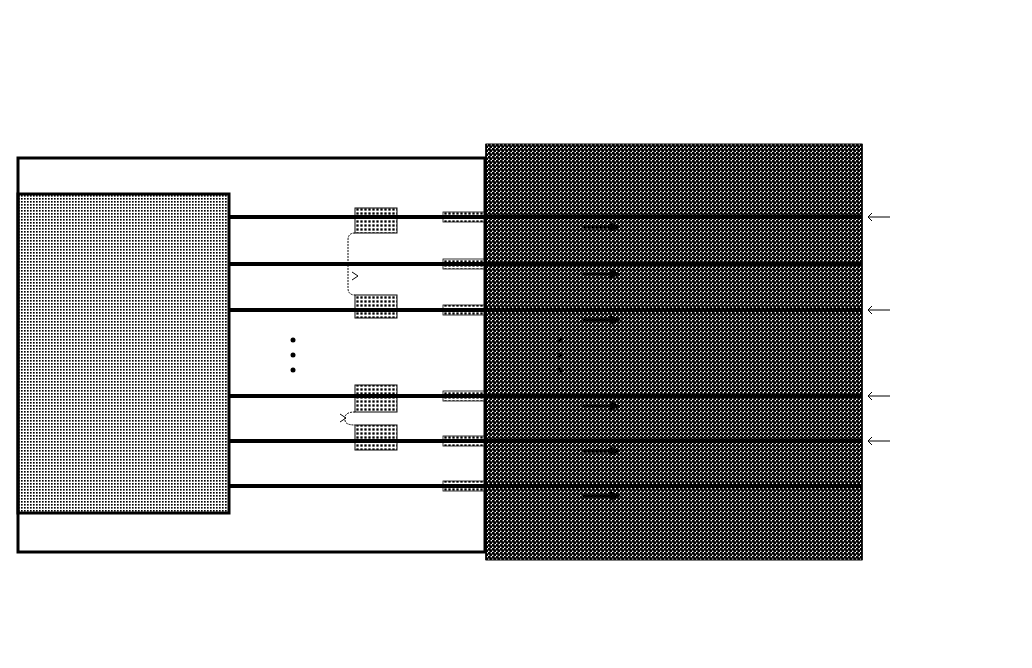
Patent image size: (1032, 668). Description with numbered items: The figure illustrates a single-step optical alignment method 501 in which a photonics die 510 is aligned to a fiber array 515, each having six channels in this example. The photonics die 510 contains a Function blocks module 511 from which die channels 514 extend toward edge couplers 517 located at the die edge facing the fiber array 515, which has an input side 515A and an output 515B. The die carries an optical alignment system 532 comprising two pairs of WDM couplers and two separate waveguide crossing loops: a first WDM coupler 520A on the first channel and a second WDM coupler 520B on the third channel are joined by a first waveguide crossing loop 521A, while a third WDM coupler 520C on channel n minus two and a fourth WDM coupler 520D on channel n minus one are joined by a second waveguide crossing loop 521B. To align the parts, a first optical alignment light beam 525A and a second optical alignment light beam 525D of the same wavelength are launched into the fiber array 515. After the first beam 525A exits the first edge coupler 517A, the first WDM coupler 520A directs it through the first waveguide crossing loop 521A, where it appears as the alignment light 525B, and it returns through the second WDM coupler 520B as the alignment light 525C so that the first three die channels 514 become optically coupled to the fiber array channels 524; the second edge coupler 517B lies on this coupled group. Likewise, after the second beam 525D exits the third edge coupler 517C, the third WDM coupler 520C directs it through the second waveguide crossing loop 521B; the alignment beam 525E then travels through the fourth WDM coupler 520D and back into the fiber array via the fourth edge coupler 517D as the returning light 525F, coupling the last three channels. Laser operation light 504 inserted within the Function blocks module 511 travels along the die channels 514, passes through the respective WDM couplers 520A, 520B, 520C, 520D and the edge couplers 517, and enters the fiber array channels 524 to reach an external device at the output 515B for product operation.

The single-step optical alignment method 501 is at (122, 119).
The photonics die 510 is at (251, 355).
The Function blocks module 511 is at (123, 353).
The channels 514 is at (272, 214).
The fiber array 515 is at (674, 328).
The input of the fiber array 515A is at (494, 132).
The output of the fiber array 515B is at (853, 133).
The edge couplers 517 is at (484, 347).
The first edge coupler 517A is at (488, 210).
The second edge coupler 517B is at (480, 309).
The third edge coupler 517C is at (445, 394).
The fourth edge coupler 517D is at (459, 442).
The first WDM coupler 520A is at (390, 214).
The second WDM coupler 520B is at (360, 318).
The third WDM coupler 520C is at (384, 385).
The fourth WDM coupler 520D is at (358, 446).
The first waveguide crossing loop 521A is at (350, 238).
The second waveguide crossing loop 521B is at (356, 404).
The fiber array channels 524 is at (505, 492).
The laser operation light 504 is at (582, 509).
The first optical alignment light beam 525A is at (882, 210).
The optical alignment light beam 525B is at (360, 274).
The optical alignment light beam 525C is at (876, 305).
The second optical alignment light beam 525D is at (883, 392).
The second optical alignment beam 525E is at (342, 418).
The optical alignment light beam 525F is at (873, 448).
The optical alignment system 532 is at (363, 322).